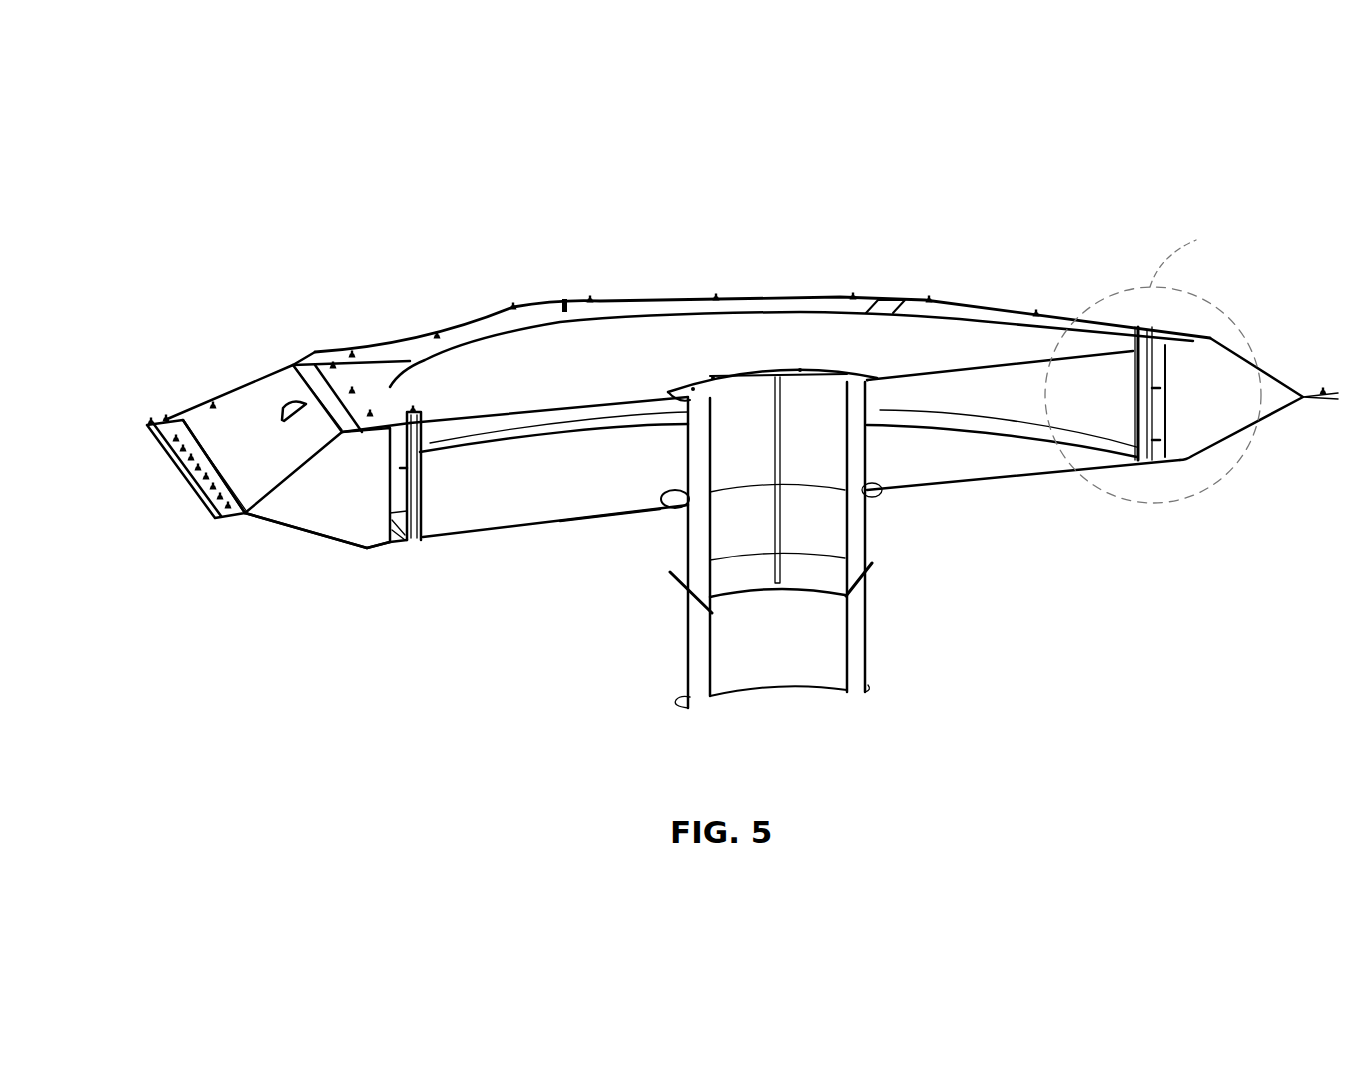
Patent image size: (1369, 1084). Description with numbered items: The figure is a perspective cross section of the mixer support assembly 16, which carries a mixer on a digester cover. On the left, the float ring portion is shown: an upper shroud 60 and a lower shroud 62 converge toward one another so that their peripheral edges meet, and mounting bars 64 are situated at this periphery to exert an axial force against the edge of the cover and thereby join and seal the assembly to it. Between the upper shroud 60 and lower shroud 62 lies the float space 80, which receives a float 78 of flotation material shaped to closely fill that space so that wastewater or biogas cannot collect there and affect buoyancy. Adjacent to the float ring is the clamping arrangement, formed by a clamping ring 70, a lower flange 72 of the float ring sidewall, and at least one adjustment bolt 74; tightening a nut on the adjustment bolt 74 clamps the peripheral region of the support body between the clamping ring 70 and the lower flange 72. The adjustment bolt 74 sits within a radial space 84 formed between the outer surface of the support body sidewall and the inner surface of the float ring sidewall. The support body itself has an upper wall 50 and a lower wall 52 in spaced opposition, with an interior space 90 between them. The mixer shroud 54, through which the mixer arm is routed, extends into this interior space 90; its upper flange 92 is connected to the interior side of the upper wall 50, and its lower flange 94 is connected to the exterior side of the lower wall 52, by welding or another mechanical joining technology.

The mixer support assembly 16 is at (1012, 237).
The upper wall 50 is at (507, 350).
The lower wall 52 is at (613, 522).
The mixer shroud 54 is at (867, 532).
The upper shroud 60 is at (272, 380).
The lower shroud 62 is at (290, 530).
The mounting bars 64 is at (148, 422).
The clamping ring 70 is at (403, 345).
The lower flange 72 is at (397, 512).
The adjustment bolt 74 is at (420, 452).
The float 78 is at (348, 528).
The float space 80 is at (352, 509).
The radial space 84 is at (413, 413).
The interior space 90 is at (617, 484).
The upper flange 92 is at (873, 378).
The lower flange 94 is at (672, 500).